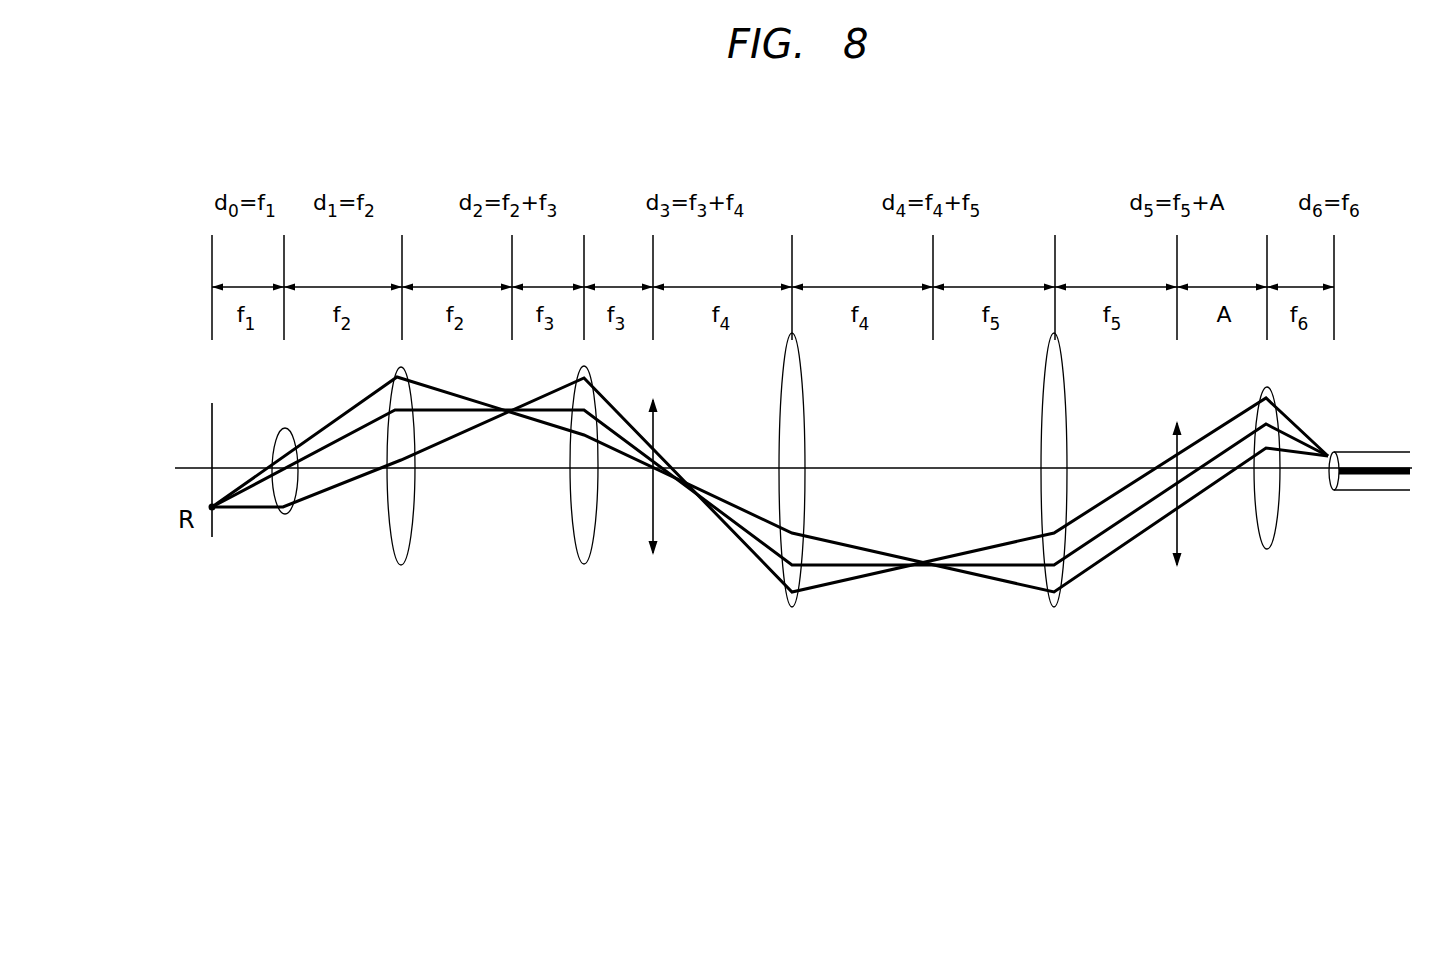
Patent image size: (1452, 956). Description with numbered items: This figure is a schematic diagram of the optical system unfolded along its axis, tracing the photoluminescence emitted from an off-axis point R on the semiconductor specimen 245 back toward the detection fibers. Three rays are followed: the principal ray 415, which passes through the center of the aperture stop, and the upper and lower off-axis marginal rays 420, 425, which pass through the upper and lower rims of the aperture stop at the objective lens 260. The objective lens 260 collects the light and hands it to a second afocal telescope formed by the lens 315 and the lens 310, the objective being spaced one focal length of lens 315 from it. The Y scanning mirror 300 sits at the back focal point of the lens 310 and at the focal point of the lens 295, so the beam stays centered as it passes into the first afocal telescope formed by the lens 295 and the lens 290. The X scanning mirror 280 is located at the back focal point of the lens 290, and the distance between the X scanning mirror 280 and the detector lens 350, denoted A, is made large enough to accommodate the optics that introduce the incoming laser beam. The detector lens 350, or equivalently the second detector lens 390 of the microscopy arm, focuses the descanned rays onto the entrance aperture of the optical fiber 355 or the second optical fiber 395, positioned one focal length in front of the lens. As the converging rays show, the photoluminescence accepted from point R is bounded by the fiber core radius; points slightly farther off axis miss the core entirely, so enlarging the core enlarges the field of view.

The semiconductor specimen 245 is at (211, 436).
The objective lens 260 is at (283, 517).
The X scanning mirror 280 is at (1177, 532).
The lens 290 is at (1054, 608).
The lens 295 is at (792, 608).
The Y scanning mirror 300 is at (653, 530).
The lens 310 is at (584, 565).
The lens 315 is at (400, 566).
The detector lens 350 is at (1297, 522).
The second detector lens 390 is at (1267, 552).
The optical fiber 355 is at (1386, 533).
The second optical fiber 395 is at (1397, 491).
The principal ray 415 is at (239, 494).
The upper off-axis marginal ray 420 is at (270, 458).
The lower off-axis marginal ray 425 is at (267, 512).